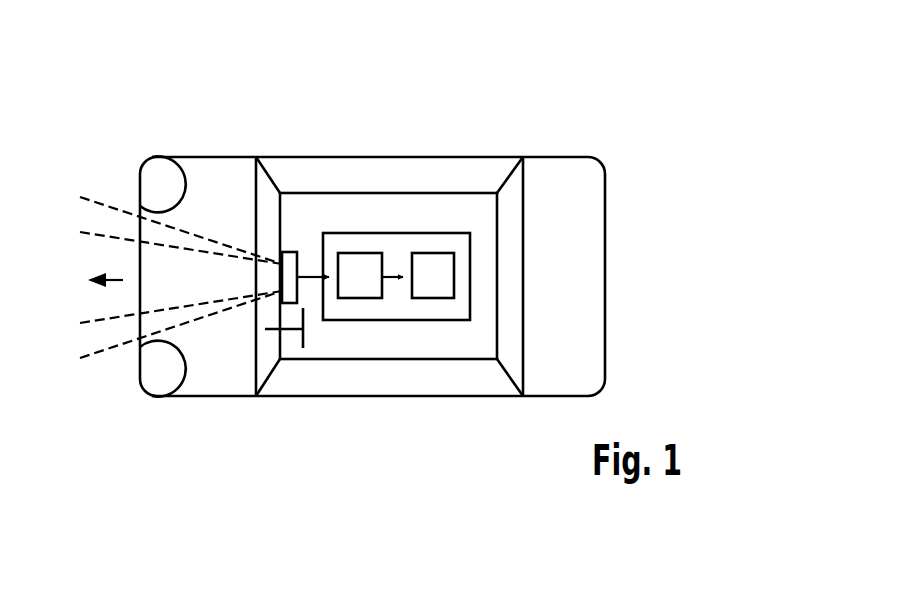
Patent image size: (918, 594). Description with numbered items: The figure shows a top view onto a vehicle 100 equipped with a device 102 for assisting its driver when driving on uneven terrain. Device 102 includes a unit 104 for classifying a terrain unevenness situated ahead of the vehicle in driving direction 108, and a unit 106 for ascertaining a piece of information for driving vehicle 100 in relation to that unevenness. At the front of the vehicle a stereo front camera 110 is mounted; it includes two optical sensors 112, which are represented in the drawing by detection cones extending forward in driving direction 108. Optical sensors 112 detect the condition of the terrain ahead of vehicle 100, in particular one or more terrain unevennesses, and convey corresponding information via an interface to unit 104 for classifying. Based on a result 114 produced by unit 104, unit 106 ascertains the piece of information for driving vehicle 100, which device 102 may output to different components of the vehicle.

The vehicle 100 is at (525, 105).
The device 102 is at (397, 233).
The unit for classifying 104 is at (360, 253).
The unit for ascertaining 106 is at (433, 253).
The driving direction 108 is at (105, 284).
The stereo front camera 110 is at (288, 252).
The optical sensors 112 is at (102, 202).
The result 114 is at (387, 275).